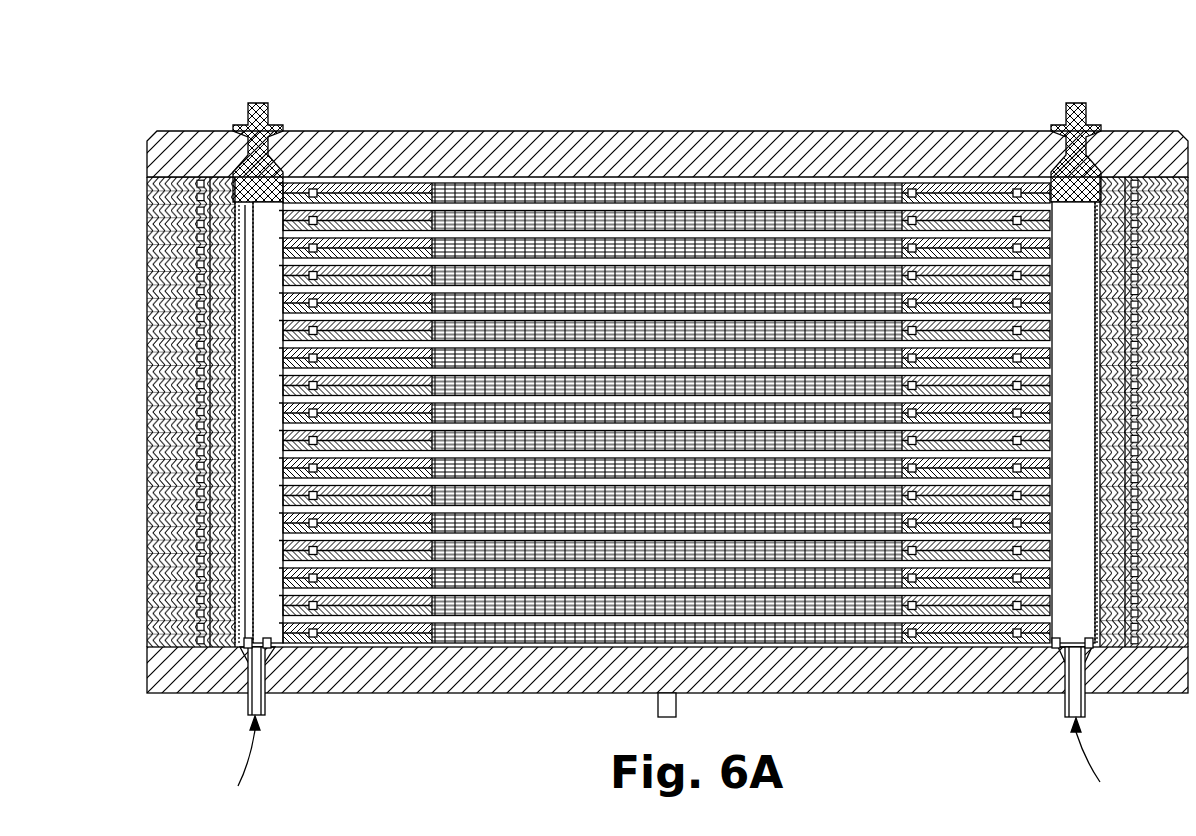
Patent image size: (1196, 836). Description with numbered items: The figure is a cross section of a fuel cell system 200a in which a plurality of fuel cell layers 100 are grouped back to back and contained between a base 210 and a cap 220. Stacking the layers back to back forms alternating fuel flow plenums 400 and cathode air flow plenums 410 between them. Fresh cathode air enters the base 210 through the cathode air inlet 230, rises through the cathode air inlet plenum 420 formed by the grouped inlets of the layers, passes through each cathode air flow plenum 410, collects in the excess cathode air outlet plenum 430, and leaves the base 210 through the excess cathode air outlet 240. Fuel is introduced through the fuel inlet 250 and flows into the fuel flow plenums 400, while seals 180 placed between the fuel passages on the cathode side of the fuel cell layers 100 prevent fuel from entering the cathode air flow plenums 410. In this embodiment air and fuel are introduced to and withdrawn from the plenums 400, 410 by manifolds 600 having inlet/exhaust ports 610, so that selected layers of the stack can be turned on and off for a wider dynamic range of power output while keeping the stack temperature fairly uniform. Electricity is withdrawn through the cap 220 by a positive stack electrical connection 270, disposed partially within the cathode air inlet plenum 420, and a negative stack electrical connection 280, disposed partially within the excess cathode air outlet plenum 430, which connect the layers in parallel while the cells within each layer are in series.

The fuel cell layer 100 is at (711, 183).
The seal 180 is at (213, 178).
The fuel cell system 200a is at (418, 104).
The base 210 is at (808, 693).
The cap 220 is at (818, 131).
The cathode air inlet 230 is at (224, 760).
The excess cathode air outlet 240 is at (1104, 756).
The fuel inlet 250 is at (657, 706).
The positive stack electrical connection 270 is at (258, 101).
The negative stack electrical connection 280 is at (1078, 101).
The fuel flow plenum 400 is at (633, 190).
The cathode air flow plenum 410 is at (571, 200).
The cathode air inlet plenum 420 is at (243, 648).
The excess cathode air outlet plenum 430 is at (1105, 648).
The manifold 600 is at (265, 652).
The inlet/exhaust port 610 is at (292, 641).